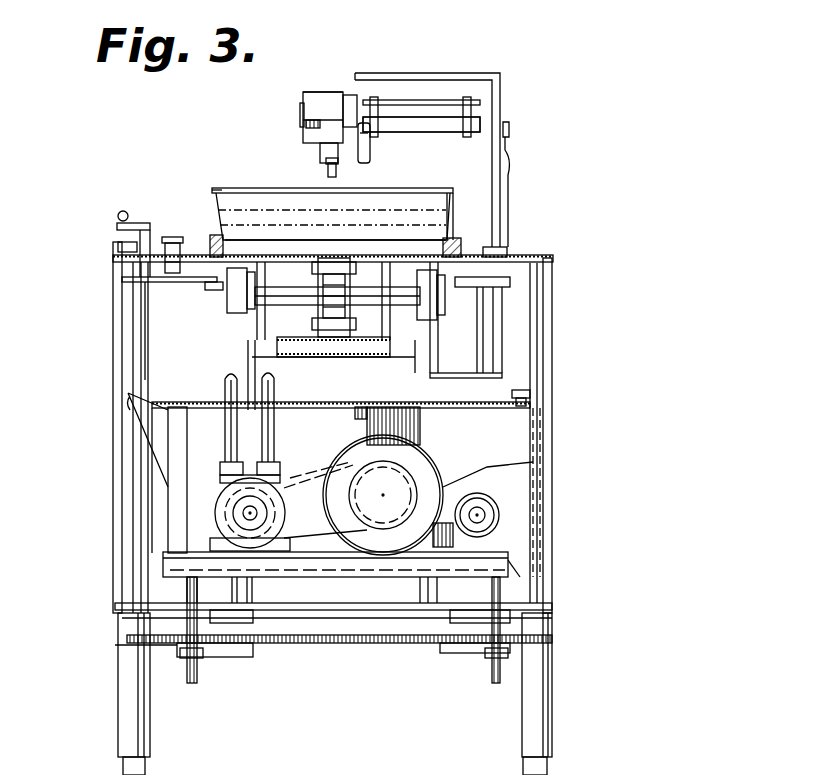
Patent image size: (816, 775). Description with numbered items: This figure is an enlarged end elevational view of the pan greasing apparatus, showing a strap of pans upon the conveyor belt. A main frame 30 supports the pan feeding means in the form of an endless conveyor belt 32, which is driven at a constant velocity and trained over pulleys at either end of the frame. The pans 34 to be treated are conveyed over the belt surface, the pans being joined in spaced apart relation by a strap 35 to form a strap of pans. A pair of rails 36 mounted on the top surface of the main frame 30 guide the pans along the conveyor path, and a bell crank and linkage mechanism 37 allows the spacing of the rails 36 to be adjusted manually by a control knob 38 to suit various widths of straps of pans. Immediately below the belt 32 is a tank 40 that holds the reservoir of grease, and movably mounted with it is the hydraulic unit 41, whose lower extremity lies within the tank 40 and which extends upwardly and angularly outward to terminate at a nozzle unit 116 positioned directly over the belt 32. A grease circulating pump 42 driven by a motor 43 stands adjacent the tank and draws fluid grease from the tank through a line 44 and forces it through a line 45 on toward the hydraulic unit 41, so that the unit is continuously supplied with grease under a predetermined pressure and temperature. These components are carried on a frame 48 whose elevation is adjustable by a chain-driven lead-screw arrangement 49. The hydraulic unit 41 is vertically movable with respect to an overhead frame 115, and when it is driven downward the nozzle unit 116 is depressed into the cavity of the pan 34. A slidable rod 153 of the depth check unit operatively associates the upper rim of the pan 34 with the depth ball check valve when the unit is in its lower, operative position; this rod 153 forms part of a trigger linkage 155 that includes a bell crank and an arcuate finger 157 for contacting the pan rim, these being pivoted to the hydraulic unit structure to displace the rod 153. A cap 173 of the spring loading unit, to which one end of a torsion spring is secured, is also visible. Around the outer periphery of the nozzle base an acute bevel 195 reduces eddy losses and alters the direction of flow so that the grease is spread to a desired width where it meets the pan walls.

The main frame 30 is at (113, 470).
The endless conveyor belt 32 is at (385, 250).
The pan 34 is at (248, 185).
The strap 35 is at (218, 192).
The rails 36 is at (212, 238).
The bell crank and linkage mechanism 37 is at (158, 293).
The control knob 38 is at (118, 227).
The tank 40 is at (518, 437).
The hydraulic unit 41 is at (523, 392).
The grease circulating pump 42 is at (215, 493).
The motor 43 is at (445, 490).
The line 44 is at (225, 384).
The line 45 is at (275, 392).
The frame 48 is at (510, 555).
The chain-driven lead-screw arrangement 49 is at (488, 661).
The overhead frame 115 is at (500, 105).
The nozzle unit 116 is at (303, 110).
The slidable rod 153 is at (510, 182).
The trigger linkage 155 is at (393, 151).
The arcuate finger 157 is at (366, 160).
The cap 173 is at (312, 94).
The acute bevel 195 is at (327, 172).